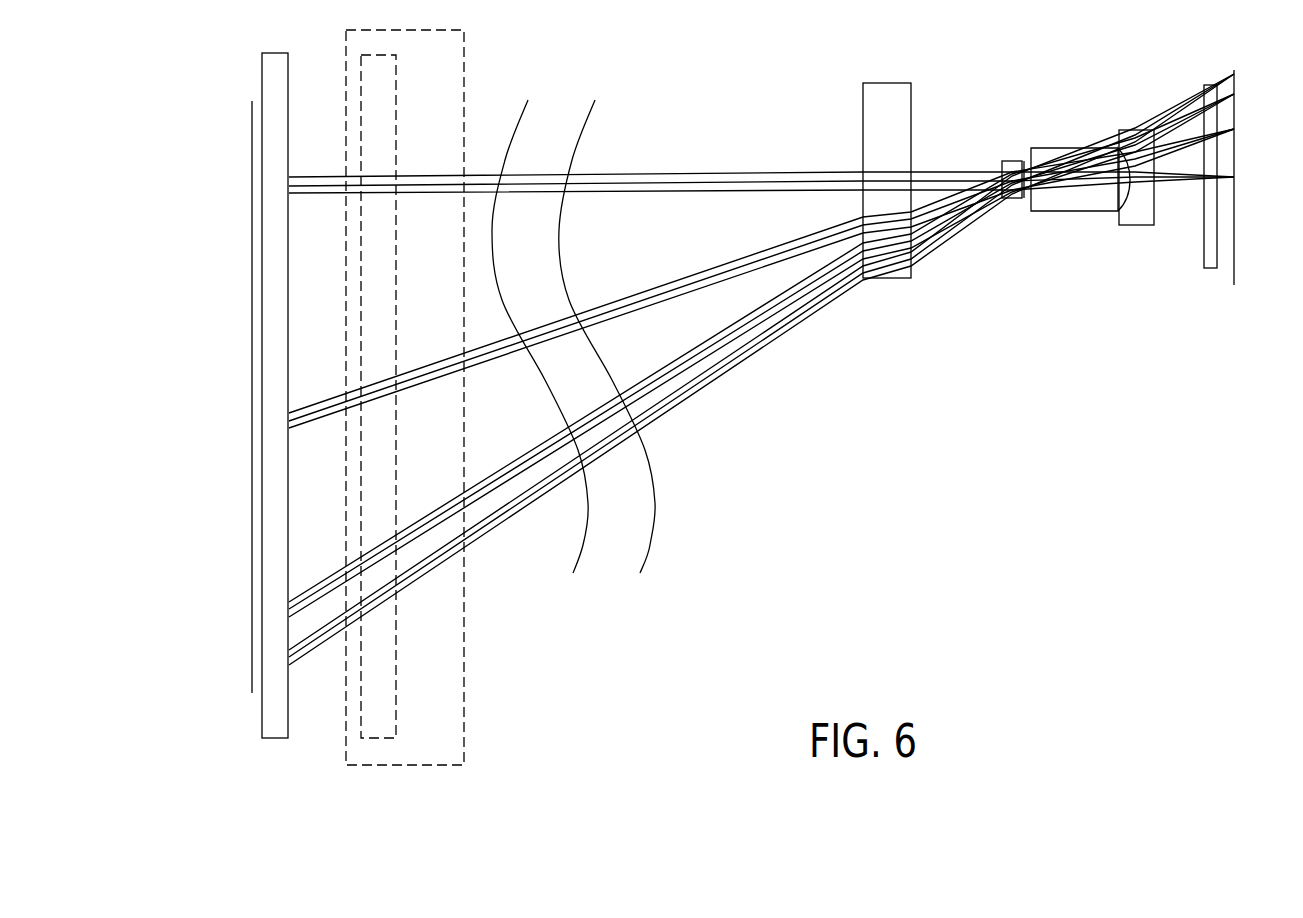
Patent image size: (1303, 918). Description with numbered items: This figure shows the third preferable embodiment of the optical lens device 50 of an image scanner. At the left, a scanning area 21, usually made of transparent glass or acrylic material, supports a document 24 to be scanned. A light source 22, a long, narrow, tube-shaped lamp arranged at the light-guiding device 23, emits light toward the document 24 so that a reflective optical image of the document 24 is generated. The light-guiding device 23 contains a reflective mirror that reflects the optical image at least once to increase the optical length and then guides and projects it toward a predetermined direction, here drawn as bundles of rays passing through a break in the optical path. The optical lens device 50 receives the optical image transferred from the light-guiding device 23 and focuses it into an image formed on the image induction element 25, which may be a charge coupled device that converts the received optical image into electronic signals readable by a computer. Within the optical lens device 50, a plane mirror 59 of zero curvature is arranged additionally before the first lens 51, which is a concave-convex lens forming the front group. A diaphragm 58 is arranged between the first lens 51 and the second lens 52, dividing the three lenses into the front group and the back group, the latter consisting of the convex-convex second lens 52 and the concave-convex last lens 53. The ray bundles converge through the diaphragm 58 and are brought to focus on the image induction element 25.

The scanning area 21 is at (271, 717).
The light source 22 is at (397, 705).
The light-guiding device 23 is at (466, 725).
The document 24 is at (253, 645).
The image induction element 25 is at (1209, 268).
The optical lens device 50 is at (1008, 222).
The first lens 51 is at (1012, 199).
The second lens 52 is at (1074, 211).
The last lens 53 is at (1136, 221).
The diaphragm 58 is at (1025, 199).
The plane mirror 59 is at (912, 277).